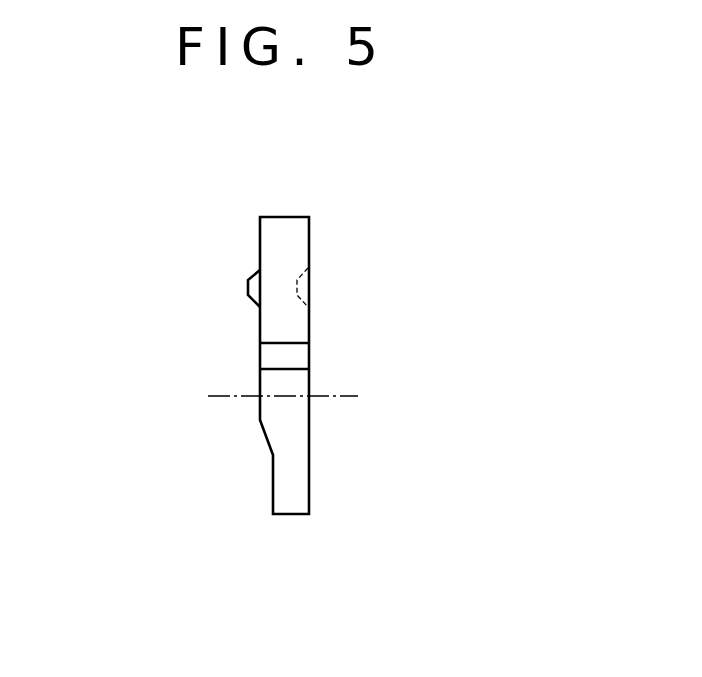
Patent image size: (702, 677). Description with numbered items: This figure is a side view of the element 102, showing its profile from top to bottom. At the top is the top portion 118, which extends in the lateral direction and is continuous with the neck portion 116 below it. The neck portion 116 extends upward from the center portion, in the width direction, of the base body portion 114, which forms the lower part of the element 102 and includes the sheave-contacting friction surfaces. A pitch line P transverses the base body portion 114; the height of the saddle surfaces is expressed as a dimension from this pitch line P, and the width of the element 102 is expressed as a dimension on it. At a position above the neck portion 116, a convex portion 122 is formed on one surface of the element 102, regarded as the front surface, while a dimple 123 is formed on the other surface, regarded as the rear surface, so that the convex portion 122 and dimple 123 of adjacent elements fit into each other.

The element 102 is at (286, 217).
The top portion 118 is at (300, 248).
The convex portion 122 is at (248, 285).
The dimple 123 is at (305, 285).
The neck portion 116 is at (300, 353).
The pitch line P is at (328, 396).
The base body portion 114 is at (300, 497).